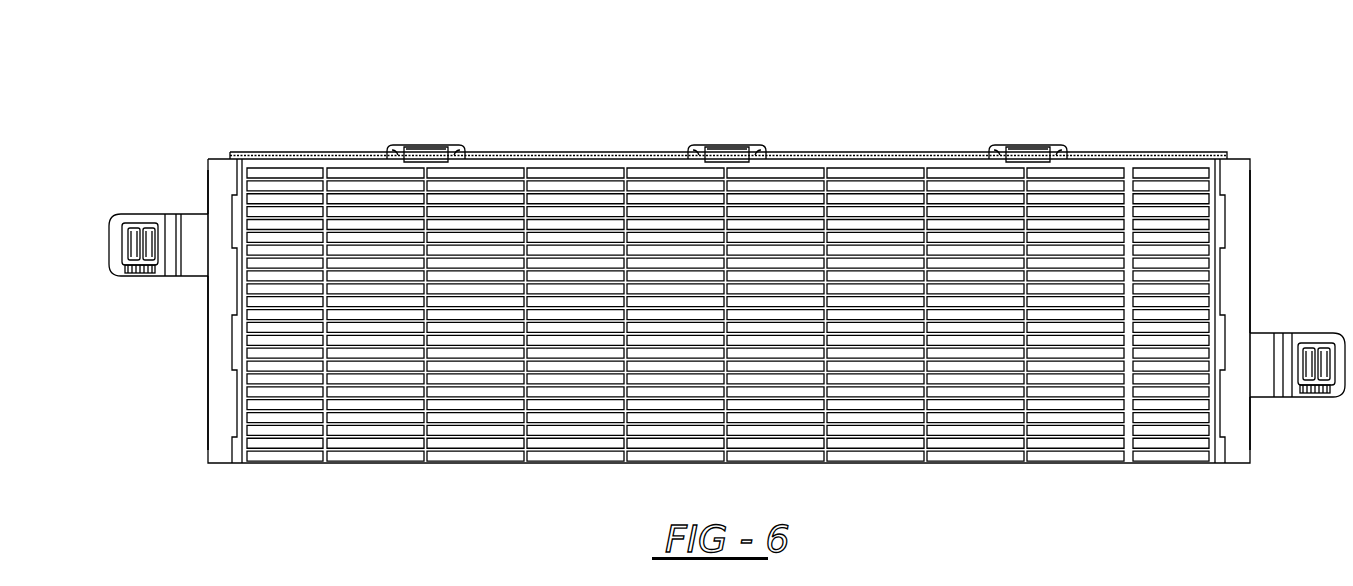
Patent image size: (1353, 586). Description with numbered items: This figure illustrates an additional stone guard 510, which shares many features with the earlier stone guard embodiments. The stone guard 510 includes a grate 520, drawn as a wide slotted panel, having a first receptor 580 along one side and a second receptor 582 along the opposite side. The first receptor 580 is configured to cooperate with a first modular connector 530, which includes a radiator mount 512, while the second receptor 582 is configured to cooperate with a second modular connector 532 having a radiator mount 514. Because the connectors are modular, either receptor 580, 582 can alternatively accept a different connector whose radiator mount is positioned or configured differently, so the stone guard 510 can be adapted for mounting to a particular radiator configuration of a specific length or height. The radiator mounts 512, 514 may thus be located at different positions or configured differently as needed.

The stone guard 510 is at (703, 61).
The radiator mount 512 is at (113, 226).
The radiator mount 514 is at (1333, 332).
The grate 520 is at (883, 205).
The first modular connector 530 is at (217, 293).
The second modular connector 532 is at (1237, 420).
The first receptor 580 is at (240, 212).
The second receptor 582 is at (1220, 328).